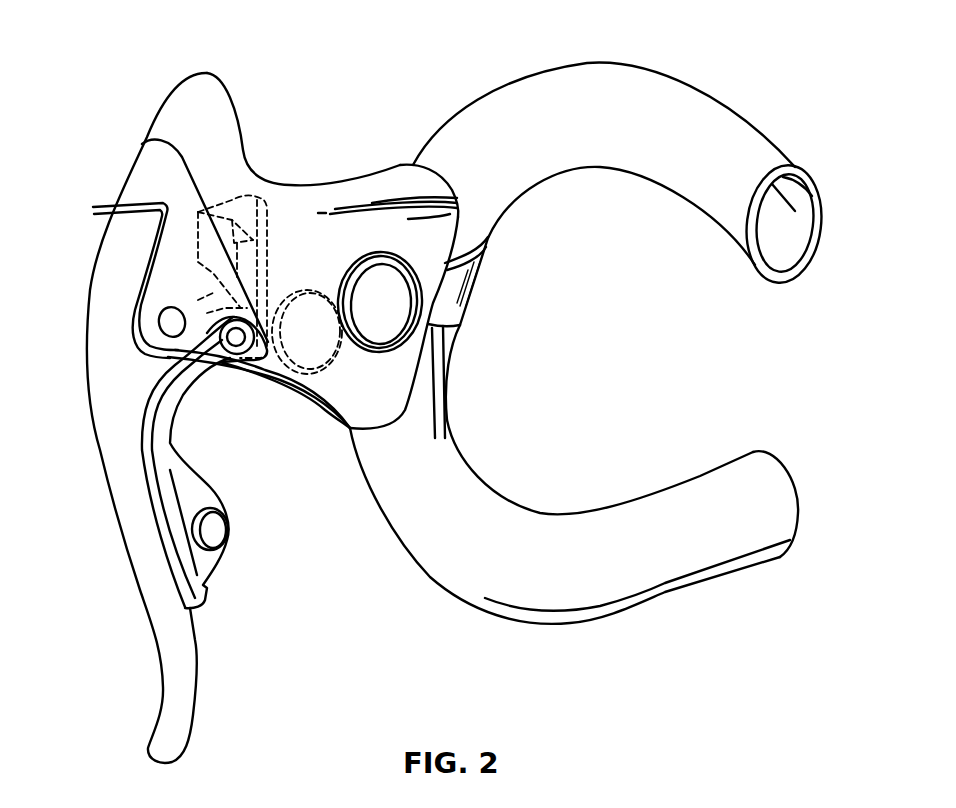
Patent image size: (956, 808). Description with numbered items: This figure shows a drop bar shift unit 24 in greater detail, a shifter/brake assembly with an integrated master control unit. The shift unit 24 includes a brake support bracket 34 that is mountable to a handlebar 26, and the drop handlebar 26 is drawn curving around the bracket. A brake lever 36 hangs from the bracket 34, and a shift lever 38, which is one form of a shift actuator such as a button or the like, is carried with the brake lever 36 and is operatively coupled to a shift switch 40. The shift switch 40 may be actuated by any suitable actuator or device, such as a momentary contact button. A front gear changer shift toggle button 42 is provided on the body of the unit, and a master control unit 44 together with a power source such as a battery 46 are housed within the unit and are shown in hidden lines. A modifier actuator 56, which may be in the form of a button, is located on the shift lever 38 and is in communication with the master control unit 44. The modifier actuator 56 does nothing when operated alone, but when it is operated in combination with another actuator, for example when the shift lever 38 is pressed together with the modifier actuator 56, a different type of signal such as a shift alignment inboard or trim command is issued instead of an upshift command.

The drop bar shift unit 24 is at (320, 131).
The handlebar 26 is at (674, 80).
The brake support bracket 34 is at (385, 187).
The brake lever 36 is at (170, 742).
The shift lever 38 is at (210, 503).
The shift switch 40 is at (222, 357).
The front gear changer shift toggle button 42 is at (388, 317).
The master control unit 44 is at (233, 198).
The battery 46 is at (323, 335).
The modifier actuator 56 is at (210, 537).